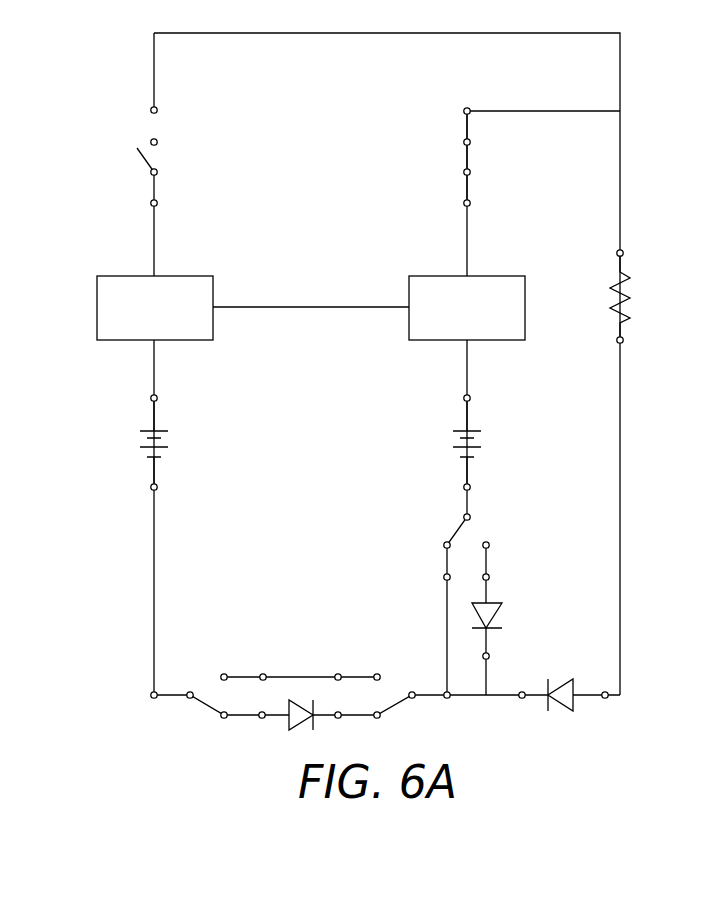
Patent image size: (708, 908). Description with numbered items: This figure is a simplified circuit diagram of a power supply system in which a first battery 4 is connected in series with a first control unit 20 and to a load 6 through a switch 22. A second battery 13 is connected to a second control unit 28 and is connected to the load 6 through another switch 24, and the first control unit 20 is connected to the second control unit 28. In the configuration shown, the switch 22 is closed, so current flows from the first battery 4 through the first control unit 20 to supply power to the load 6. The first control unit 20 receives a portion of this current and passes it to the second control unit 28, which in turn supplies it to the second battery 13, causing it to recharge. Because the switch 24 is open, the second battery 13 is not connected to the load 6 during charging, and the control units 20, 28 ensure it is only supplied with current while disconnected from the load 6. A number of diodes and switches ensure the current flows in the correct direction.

The switch 24 is at (158, 159).
The switch 22 is at (465, 157).
The second control unit 28 is at (97, 306).
The first control unit 20 is at (526, 306).
The load 6 is at (629, 296).
The second battery 13 is at (160, 430).
The first battery 4 is at (473, 430).